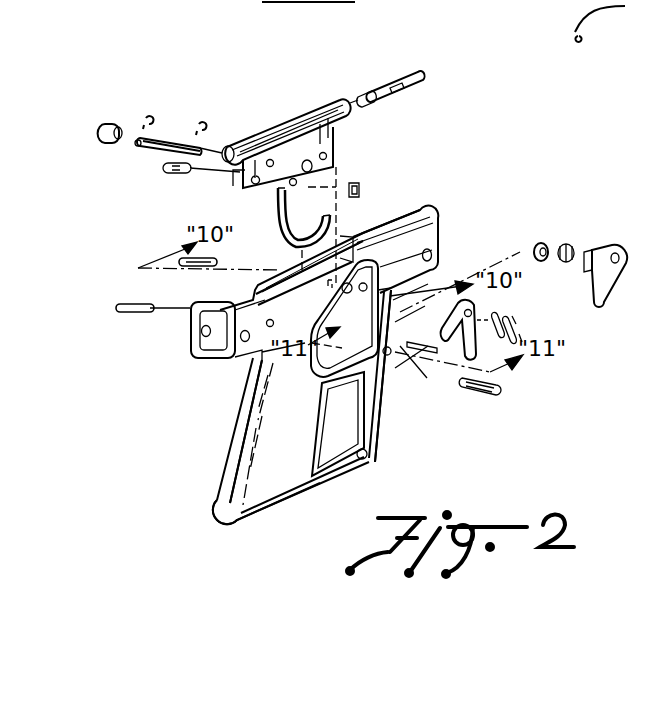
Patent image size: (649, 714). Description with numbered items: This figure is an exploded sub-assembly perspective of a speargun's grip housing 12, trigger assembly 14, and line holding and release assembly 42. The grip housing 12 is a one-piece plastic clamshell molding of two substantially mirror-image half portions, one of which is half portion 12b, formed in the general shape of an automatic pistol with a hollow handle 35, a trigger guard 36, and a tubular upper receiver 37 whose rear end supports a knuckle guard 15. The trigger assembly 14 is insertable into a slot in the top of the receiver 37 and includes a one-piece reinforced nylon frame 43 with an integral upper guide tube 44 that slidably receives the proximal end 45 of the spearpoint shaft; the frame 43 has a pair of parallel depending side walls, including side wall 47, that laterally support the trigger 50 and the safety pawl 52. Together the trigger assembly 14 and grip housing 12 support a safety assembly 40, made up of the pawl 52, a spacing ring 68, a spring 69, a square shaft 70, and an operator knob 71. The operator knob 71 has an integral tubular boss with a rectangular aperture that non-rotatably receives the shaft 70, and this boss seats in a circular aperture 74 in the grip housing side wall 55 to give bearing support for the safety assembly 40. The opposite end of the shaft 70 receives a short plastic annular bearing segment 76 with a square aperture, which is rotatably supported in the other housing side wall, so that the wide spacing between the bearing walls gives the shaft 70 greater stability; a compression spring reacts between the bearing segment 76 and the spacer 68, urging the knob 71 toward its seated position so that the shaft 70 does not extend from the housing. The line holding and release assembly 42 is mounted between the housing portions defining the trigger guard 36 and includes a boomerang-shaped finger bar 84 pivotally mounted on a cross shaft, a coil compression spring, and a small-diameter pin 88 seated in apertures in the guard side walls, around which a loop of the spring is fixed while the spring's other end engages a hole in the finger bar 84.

The grip housing 12 is at (200, 467).
The half portion 12b is at (278, 483).
The trigger assembly 14 is at (251, 114).
The knuckle guard 15 is at (385, 418).
The hollow handle 35 is at (255, 500).
The trigger guard 36 is at (413, 357).
The tubular upper receiver 37 is at (432, 212).
The safety assembly 40 is at (126, 108).
The line holding and release assembly 42 is at (500, 314).
The frame 43 is at (306, 135).
The upper guide tube 44 is at (290, 128).
The proximal end 45 is at (415, 88).
The side wall 47 is at (342, 130).
The trigger 50 is at (276, 214).
The safety pawl 52 is at (360, 190).
The grip housing side wall 55 is at (342, 297).
The spacing ring 68 is at (541, 242).
The spring 69 is at (575, 243).
The shaft 70 is at (172, 138).
The operator knob 71 is at (612, 245).
The circular aperture 74 is at (440, 238).
The bearing segment 76 is at (104, 130).
The finger bar 84 is at (505, 368).
The pin 88 is at (436, 358).